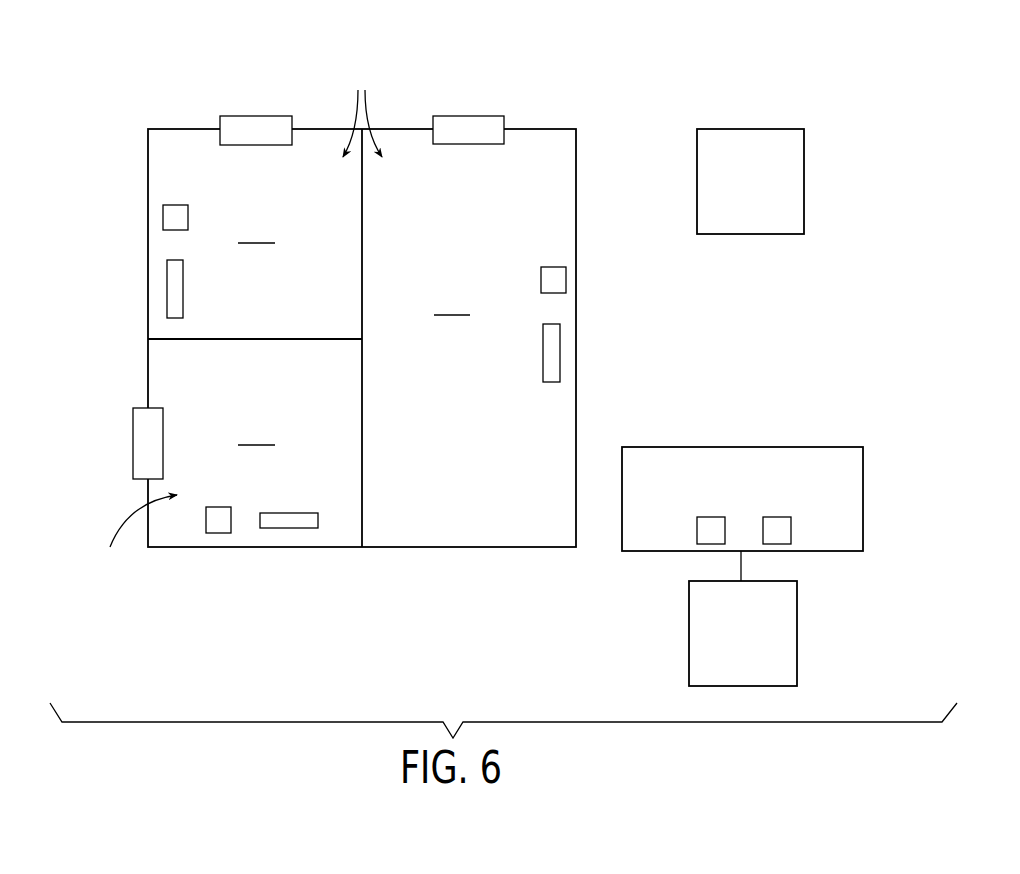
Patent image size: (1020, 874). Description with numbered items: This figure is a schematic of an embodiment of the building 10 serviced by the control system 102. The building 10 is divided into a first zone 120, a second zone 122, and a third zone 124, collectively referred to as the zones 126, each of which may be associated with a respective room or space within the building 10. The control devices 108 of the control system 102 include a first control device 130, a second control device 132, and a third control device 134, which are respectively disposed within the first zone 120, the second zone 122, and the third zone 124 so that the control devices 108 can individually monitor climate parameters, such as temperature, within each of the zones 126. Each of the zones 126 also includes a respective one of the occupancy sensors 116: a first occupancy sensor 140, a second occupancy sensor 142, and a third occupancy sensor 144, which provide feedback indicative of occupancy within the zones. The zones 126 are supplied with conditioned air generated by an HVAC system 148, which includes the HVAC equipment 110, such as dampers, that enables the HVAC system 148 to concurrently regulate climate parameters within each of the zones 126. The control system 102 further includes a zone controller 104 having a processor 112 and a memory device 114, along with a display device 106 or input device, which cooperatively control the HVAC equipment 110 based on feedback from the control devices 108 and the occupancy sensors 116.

The building 10 is at (120, 103).
The control system 102 is at (733, 317).
The zone controller 104 is at (726, 473).
The display device 106 is at (689, 610).
The control devices 108 is at (390, 456).
The HVAC equipment 110 is at (250, 116).
The processor 112 is at (712, 517).
The memory device 114 is at (777, 517).
The occupancy sensors 116 is at (393, 392).
The first zone 120 is at (255, 278).
The second zone 122 is at (256, 431).
The third zone 124 is at (416, 338).
The zones 126 is at (237, 321).
The first control device 130 is at (165, 290).
The second control device 132 is at (288, 528).
The third control device 134 is at (560, 350).
The first occupancy sensor 140 is at (163, 219).
The second occupancy sensor 142 is at (215, 533).
The third occupancy sensor 144 is at (565, 283).
The HVAC system 148 is at (743, 129).